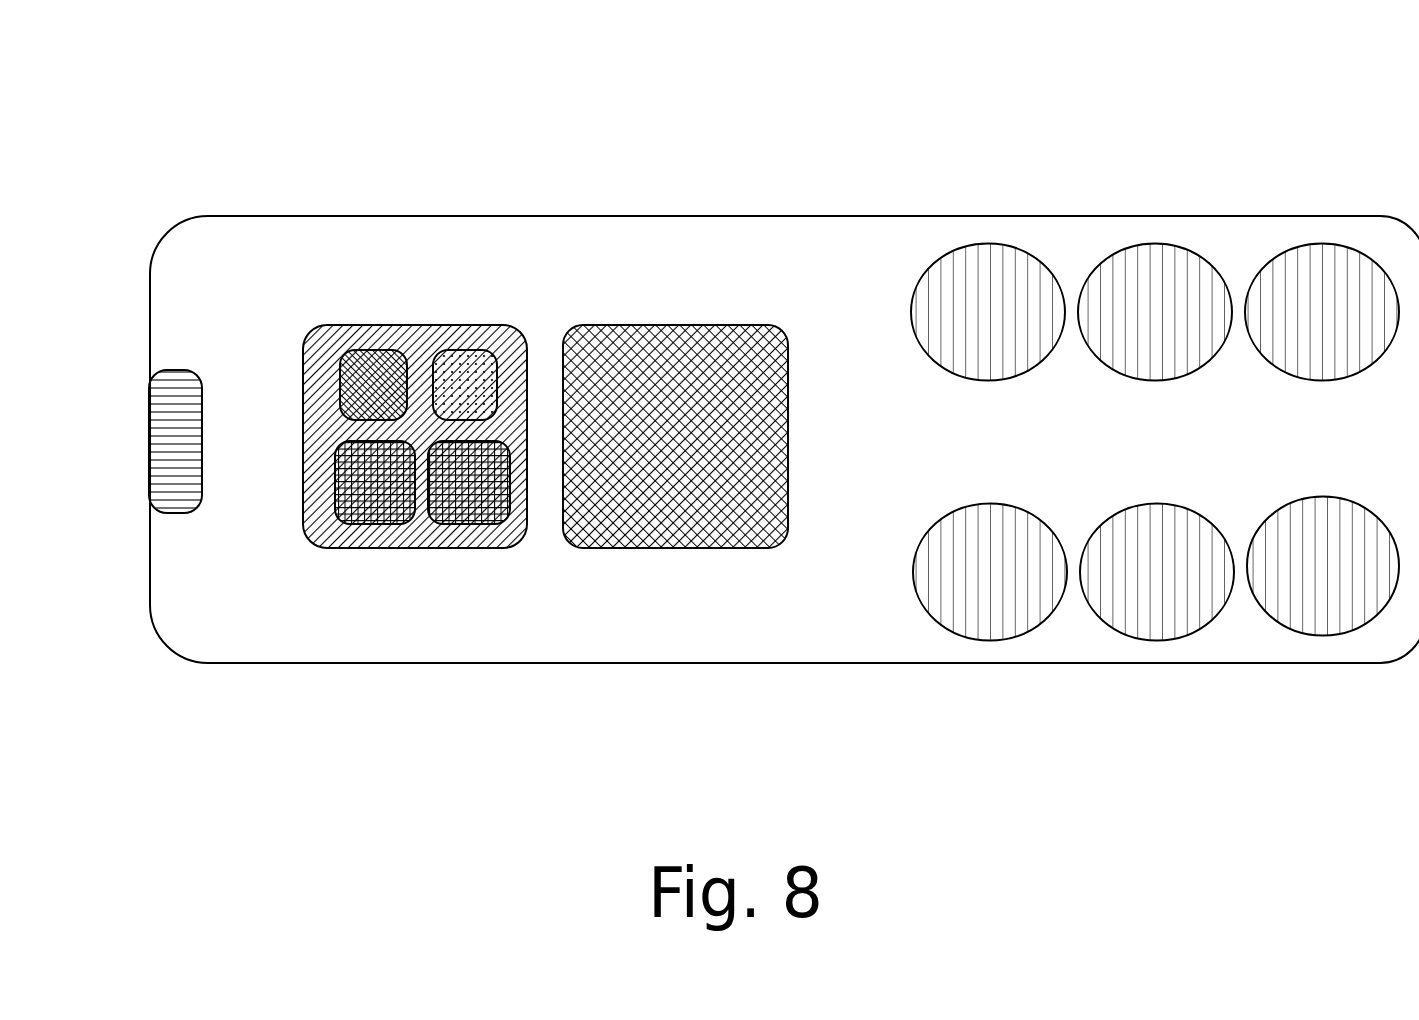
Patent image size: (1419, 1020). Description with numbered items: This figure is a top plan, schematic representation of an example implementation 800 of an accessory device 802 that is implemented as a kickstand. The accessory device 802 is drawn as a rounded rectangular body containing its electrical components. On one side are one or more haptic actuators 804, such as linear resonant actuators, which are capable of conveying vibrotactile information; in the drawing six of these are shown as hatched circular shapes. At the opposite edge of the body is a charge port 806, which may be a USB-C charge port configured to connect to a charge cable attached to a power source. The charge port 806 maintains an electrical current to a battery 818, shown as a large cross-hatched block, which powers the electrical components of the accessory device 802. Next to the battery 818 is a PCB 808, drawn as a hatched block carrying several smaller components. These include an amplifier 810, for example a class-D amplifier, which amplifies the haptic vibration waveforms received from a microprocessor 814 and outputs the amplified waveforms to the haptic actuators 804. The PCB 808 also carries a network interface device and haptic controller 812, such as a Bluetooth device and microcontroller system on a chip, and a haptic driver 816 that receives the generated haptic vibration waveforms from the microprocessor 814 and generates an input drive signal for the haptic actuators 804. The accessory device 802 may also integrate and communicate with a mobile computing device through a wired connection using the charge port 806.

The example implementation 800 is at (182, 42).
The accessory device 802 is at (568, 216).
The haptic actuators 804 is at (986, 380).
The charge port 806 is at (172, 370).
The PCB 808 is at (350, 325).
The amplifier 810 is at (465, 350).
The network interface device and haptic controller 812 is at (372, 524).
The microprocessor 814 is at (374, 350).
The haptic driver 816 is at (467, 524).
The battery 818 is at (676, 548).